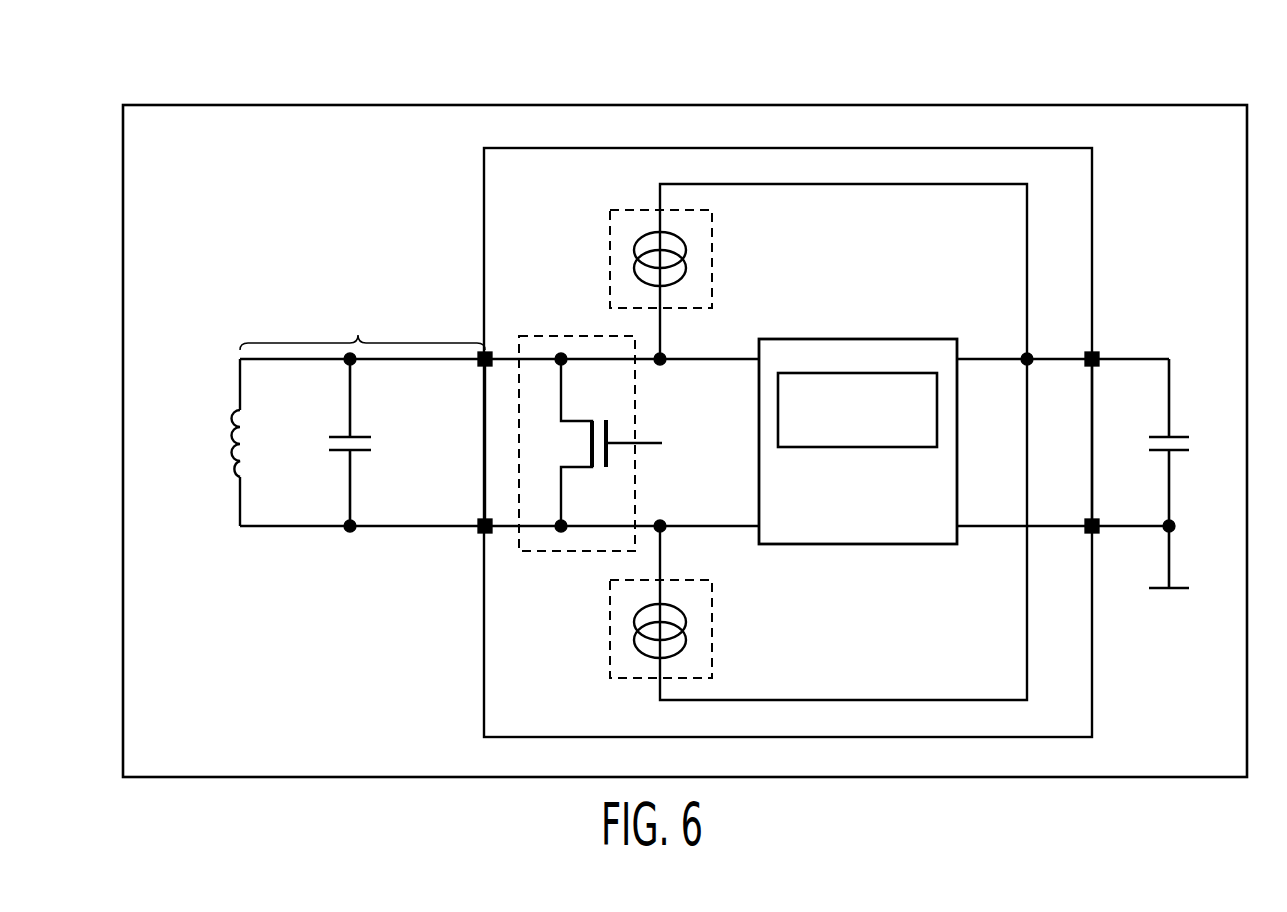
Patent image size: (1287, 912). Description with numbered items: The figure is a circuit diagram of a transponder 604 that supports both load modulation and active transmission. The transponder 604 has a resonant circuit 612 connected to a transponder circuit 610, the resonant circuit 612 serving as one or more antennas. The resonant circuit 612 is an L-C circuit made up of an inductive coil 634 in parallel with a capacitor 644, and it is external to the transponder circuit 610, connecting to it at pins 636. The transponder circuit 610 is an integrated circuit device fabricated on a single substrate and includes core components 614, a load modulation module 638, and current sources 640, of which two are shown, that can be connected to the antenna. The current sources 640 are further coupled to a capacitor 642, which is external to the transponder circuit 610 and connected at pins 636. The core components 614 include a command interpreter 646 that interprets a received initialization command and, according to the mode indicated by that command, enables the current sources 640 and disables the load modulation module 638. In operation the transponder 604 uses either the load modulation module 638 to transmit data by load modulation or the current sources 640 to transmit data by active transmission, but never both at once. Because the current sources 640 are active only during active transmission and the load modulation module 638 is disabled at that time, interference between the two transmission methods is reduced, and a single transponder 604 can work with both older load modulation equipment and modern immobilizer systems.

The transponder 604 is at (1152, 105).
The transponder circuit 610 is at (484, 219).
The resonant circuit 612 is at (319, 419).
The core components 614 is at (941, 339).
The inductive coil 634 is at (232, 452).
The pins 636 is at (491, 353).
The load modulation module 638 is at (636, 474).
The current sources 640 is at (712, 243).
The capacitor 642 is at (1182, 432).
The capacitor 644 is at (340, 436).
The command interpreter 646 is at (838, 373).